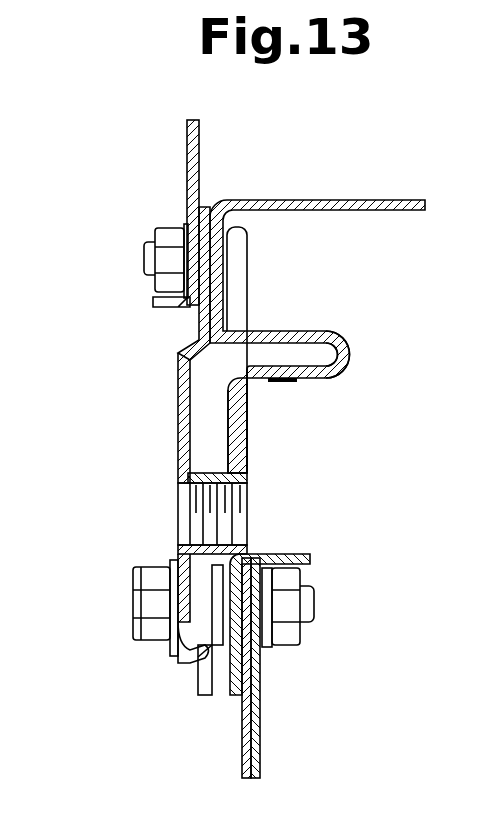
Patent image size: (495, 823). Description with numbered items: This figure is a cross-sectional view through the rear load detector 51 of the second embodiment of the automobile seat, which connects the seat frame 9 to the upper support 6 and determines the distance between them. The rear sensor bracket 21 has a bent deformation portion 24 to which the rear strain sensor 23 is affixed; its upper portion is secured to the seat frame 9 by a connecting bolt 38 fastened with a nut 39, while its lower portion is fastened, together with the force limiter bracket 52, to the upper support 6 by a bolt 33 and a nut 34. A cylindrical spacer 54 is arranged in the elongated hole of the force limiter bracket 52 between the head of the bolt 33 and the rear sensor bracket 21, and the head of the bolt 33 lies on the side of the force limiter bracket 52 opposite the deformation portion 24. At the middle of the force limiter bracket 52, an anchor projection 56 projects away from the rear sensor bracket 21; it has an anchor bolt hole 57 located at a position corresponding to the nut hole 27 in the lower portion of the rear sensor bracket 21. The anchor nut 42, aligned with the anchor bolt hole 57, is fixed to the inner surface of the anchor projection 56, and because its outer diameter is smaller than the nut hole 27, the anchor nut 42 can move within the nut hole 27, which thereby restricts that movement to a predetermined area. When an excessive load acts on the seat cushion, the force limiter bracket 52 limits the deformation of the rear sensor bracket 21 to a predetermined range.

The seat frame 9 is at (200, 131).
The force limiter bracket 52 is at (205, 207).
The nut 39 is at (163, 232).
The rear sensor bracket 21 is at (385, 205).
The connecting bolt 38 is at (232, 262).
The rear load detector 51 is at (392, 311).
The deformation portion 24 is at (348, 357).
The rear strain sensor 23 is at (284, 382).
The anchor projection 56 is at (176, 410).
The anchor bolt hole 57 is at (182, 490).
The nut hole 27 is at (242, 470).
The anchor nut 42 is at (246, 478).
The bolt 33 is at (138, 578).
The nut 34 is at (300, 634).
The cylindrical spacer 54 is at (186, 660).
The upper support 6 is at (241, 728).